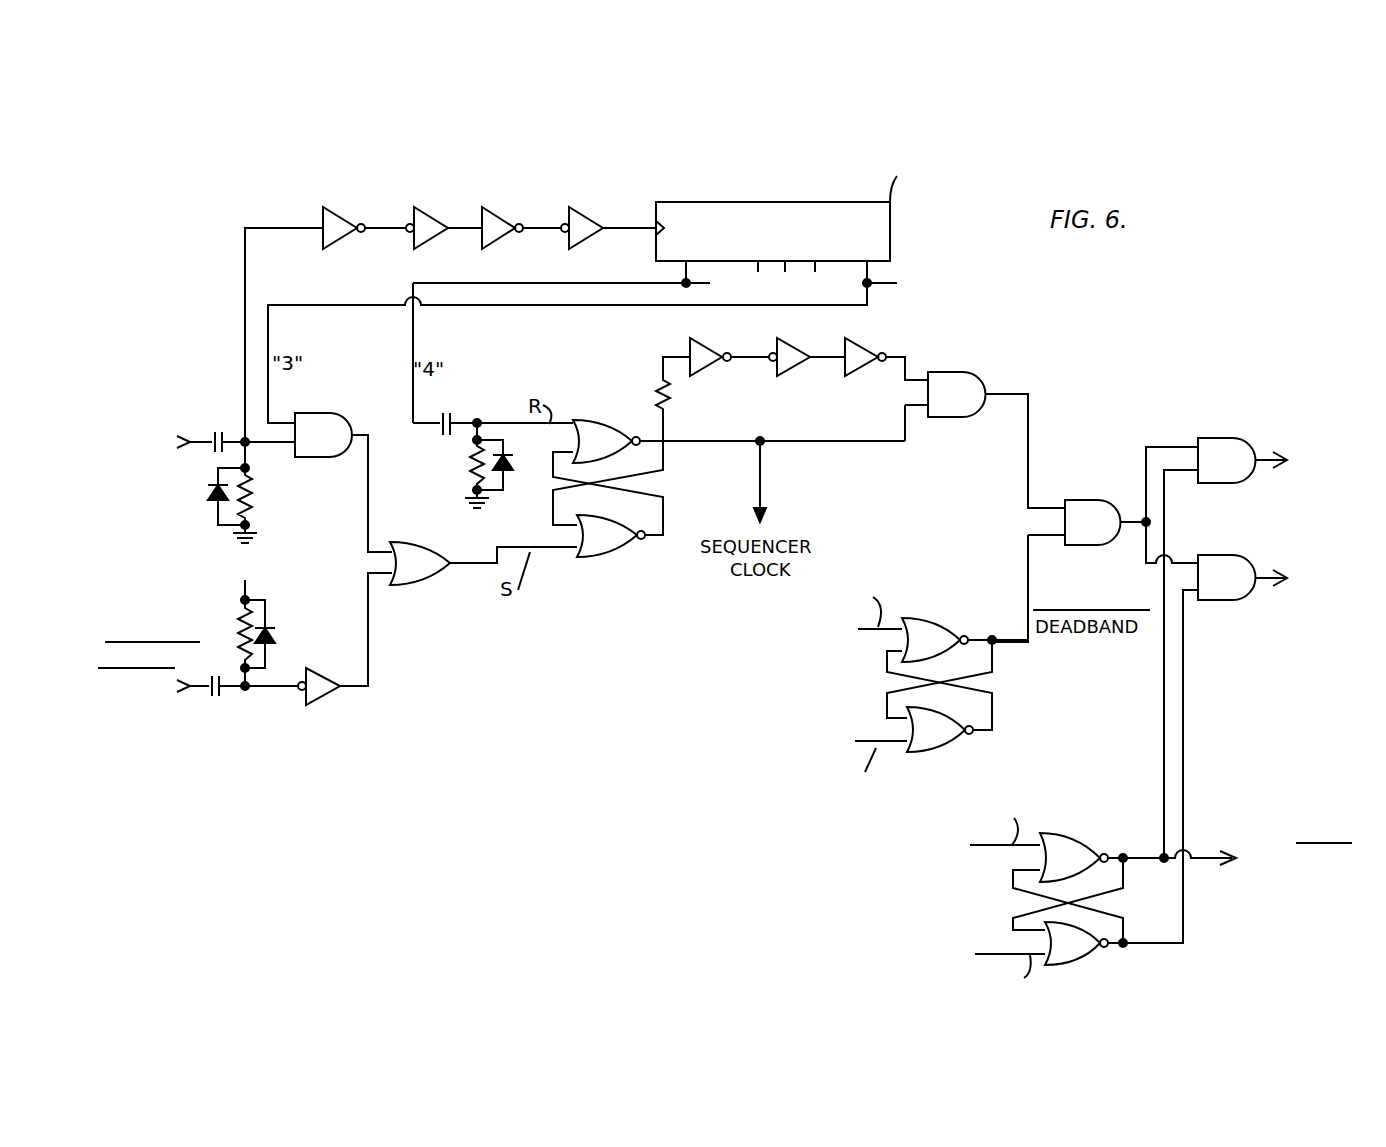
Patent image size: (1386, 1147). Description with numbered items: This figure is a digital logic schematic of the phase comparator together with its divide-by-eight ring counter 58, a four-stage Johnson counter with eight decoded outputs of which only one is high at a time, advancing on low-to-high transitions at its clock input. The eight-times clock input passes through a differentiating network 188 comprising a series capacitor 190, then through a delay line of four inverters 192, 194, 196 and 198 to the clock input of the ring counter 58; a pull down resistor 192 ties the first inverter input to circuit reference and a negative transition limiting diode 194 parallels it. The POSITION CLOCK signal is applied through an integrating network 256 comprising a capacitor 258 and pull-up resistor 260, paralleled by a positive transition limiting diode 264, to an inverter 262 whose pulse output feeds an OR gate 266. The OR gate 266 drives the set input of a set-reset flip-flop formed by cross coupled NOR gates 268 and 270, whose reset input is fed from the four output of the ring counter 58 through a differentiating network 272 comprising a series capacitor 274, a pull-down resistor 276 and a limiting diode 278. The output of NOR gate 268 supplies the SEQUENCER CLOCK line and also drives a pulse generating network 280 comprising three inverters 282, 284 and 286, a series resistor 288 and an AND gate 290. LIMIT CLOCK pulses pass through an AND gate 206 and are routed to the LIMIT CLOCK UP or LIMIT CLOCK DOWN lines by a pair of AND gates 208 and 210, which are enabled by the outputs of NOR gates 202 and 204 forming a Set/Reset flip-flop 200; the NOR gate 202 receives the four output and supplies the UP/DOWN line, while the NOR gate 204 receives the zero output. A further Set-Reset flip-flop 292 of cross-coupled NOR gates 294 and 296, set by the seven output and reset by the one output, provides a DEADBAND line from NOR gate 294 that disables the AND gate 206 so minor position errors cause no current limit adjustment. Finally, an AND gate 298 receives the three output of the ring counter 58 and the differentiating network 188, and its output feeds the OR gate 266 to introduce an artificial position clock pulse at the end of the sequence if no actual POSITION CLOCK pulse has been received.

The divide-by-eight ring counter 58 is at (795, 202).
The differentiating network 188 is at (184, 470).
The series capacitor 190 is at (222, 432).
The pull down resistor 192 is at (333, 209).
The negative transition limiting diode 194 is at (420, 209).
The inverter 196 is at (486, 209).
The inverter 198 is at (579, 212).
The Set/Reset flip-flop 200 is at (1098, 782).
The upper NOR gate 202 is at (1073, 836).
The lower NOR gate 204 is at (1075, 965).
The AND gate 206 is at (1097, 500).
The AND gate 208 is at (1228, 438).
The AND gate 210 is at (1236, 555).
The integrating network 256 is at (160, 633).
The capacitor 258 is at (215, 700).
The pull-up resistor 260 is at (236, 630).
The inverter 262 is at (322, 703).
The positive transition limiting diode 264 is at (276, 633).
The OR gate 266 is at (426, 545).
The NOR gate 268 is at (623, 425).
The NOR gate 270 is at (597, 560).
The differentiating network 272 is at (458, 452).
The series capacitor 274 is at (453, 415).
The pull-down resistor 276 is at (468, 468).
The limiting diode 278 is at (512, 463).
The pulse generating network 280 is at (932, 353).
The inverter 282 is at (700, 343).
The inverter 284 is at (793, 380).
The inverter 286 is at (859, 380).
The series resistor 288 is at (673, 386).
The AND gate 290 is at (977, 380).
The Set-Reset flip-flop 292 is at (988, 570).
The NOR gate 294 is at (942, 622).
The NOR gate 296 is at (938, 752).
The AND gate 298 is at (343, 414).